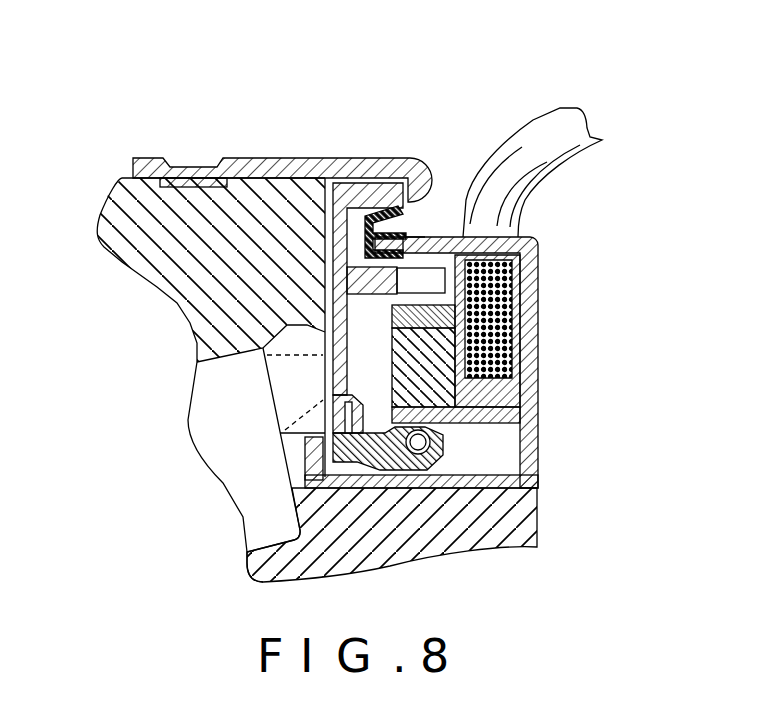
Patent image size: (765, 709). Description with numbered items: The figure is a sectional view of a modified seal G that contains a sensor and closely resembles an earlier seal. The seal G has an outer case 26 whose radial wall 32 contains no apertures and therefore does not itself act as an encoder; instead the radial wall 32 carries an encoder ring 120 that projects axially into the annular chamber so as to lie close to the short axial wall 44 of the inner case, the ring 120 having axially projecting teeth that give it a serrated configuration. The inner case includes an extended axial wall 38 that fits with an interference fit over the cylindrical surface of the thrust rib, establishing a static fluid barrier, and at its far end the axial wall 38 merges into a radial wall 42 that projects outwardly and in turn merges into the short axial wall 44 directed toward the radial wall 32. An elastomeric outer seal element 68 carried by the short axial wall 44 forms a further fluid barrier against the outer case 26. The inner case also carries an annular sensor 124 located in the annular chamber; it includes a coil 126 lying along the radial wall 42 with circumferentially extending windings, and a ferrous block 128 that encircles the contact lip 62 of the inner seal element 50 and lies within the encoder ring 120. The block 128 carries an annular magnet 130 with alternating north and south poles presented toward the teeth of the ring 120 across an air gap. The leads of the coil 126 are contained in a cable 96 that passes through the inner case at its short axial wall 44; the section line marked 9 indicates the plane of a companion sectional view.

The outer case 26 is at (275, 157).
The radial wall 32 is at (325, 367).
The elastomeric outer seal element 68 is at (365, 222).
The encoder ring 120 is at (392, 275).
The annular magnet 130 is at (395, 318).
The inner seal element 50 is at (343, 445).
The contact lip 62 is at (395, 465).
The extended axial wall 38 is at (480, 495).
The radial wall 42 is at (538, 300).
The short axial wall 44 is at (424, 237).
The coil 126 is at (515, 337).
The annular sensor 124 is at (513, 363).
The ferrous block 128 is at (435, 382).
The cable 96 is at (553, 157).
The modified seal G is at (502, 125).
The section line 9- 9 is at (406, 113).